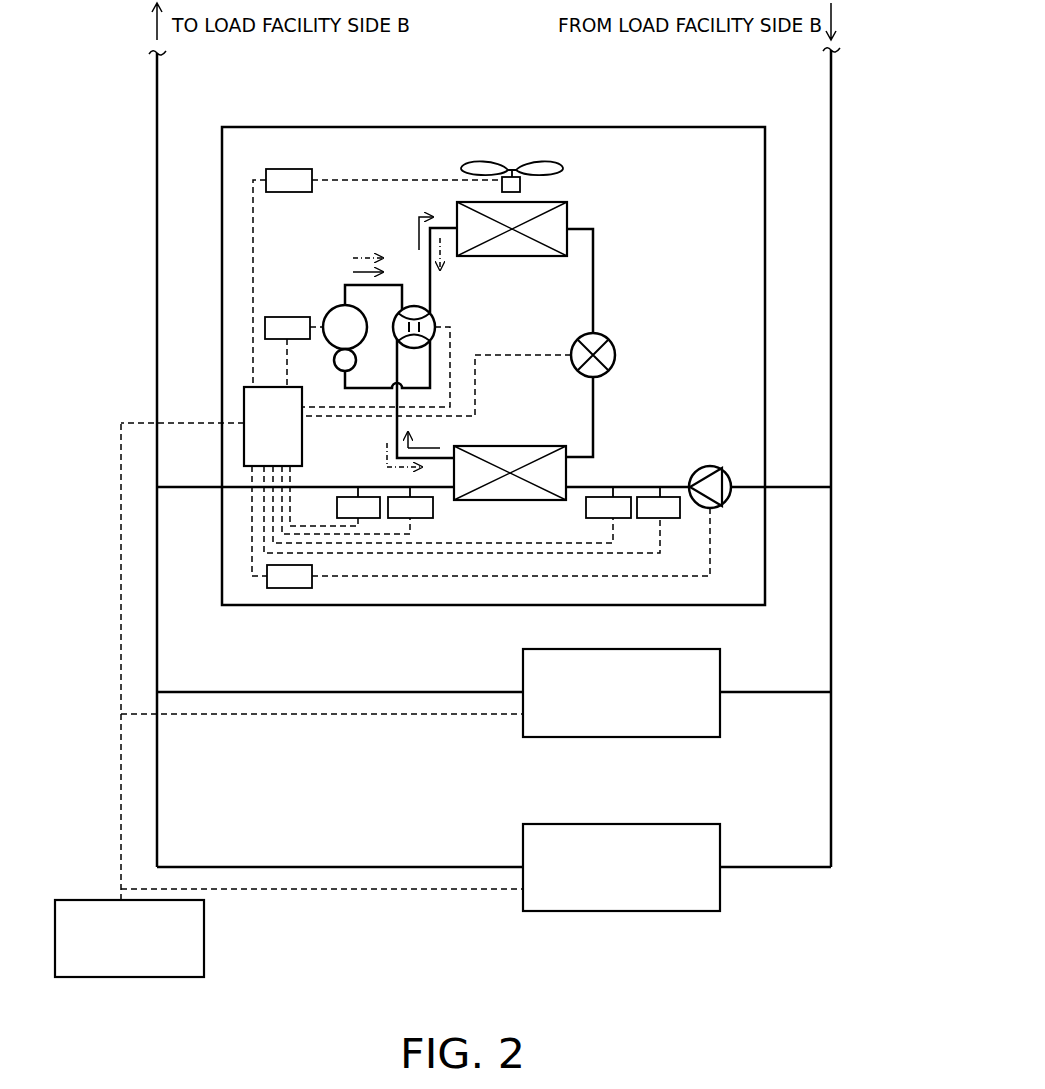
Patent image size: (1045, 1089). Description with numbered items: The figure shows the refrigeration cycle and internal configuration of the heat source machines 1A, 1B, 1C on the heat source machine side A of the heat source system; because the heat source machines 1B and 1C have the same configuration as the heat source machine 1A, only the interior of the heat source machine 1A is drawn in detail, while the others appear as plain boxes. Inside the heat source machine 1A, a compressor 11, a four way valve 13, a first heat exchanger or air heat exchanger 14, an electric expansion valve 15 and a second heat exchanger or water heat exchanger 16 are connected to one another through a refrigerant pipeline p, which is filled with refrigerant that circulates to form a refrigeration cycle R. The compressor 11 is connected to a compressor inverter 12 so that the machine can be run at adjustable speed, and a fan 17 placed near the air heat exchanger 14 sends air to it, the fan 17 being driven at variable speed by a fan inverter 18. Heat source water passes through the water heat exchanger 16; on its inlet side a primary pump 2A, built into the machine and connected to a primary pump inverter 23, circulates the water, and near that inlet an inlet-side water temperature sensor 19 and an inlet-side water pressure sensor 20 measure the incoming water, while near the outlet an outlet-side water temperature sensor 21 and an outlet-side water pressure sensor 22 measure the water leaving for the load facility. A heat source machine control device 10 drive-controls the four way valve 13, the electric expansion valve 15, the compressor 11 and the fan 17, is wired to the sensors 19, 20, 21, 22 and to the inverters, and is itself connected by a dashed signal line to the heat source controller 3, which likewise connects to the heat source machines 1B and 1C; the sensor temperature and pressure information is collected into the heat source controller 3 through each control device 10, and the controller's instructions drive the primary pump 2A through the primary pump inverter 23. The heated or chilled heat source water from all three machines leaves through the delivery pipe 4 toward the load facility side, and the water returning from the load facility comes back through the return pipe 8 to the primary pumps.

The delivery pipe 4 is at (157, 100).
The return pipe 8 is at (831, 100).
The heat source machine 1A is at (509, 127).
The heat source machine 1B is at (672, 649).
The heat source machine 1C is at (672, 824).
The heat source controller 3 is at (204, 938).
The heat source machine control device 10 is at (244, 408).
The compressor 11 is at (336, 306).
The compressor inverter 12 is at (288, 317).
The four way valve 13 is at (435, 322).
The first heat exchanger (air heat exchanger) 14 is at (567, 218).
The electric expansion valve 15 is at (615, 352).
The second heat exchanger (water heat exchanger) 16 is at (510, 446).
The fan 17 is at (563, 172).
The fan inverter 18 is at (289, 192).
The inlet-side water temperature sensor 19 is at (668, 497).
The inlet-side water pressure sensor 20 is at (605, 497).
The outlet-side water temperature sensor 21 is at (395, 497).
The outlet-side water pressure sensor 22 is at (348, 497).
The primary pump inverter 23 is at (290, 588).
The primary pump 2A is at (720, 505).
The refrigeration cycle R is at (612, 272).
The refrigerant pipeline p is at (593, 312).
The heat source machine side A is at (836, 434).